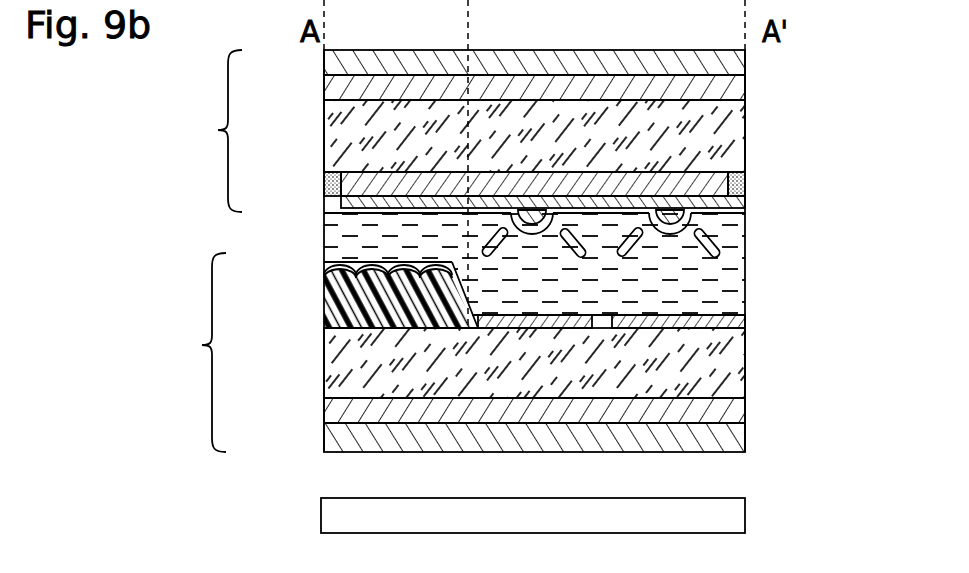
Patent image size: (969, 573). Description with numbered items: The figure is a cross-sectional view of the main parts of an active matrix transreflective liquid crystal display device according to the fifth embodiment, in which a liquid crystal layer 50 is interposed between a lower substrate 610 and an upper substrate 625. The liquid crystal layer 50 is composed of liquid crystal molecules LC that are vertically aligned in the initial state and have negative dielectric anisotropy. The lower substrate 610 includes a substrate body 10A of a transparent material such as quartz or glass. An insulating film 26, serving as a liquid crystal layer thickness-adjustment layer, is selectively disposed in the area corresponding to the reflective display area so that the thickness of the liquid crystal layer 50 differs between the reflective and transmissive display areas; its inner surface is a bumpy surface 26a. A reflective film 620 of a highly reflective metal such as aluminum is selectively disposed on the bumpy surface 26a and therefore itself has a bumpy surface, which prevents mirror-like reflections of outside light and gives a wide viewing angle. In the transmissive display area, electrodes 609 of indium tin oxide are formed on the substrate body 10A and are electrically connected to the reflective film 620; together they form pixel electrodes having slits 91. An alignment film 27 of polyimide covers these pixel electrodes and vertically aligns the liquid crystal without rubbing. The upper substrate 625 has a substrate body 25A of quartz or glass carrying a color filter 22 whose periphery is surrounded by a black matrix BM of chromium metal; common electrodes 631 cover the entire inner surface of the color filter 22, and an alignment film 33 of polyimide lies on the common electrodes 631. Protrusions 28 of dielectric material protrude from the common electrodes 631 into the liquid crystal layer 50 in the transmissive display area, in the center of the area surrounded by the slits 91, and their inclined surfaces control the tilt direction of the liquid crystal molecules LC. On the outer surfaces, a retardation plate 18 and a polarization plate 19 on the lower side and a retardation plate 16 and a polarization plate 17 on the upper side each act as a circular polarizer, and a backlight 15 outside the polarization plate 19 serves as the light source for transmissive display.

The polarization plate 17 is at (747, 55).
The retardation plate 16 is at (747, 90).
The substrate body 25A is at (747, 120).
The black matrix BM is at (332, 183).
The color filter 22 is at (732, 168).
The common electrodes 631 is at (747, 205).
The protrusions 28 is at (533, 207).
The liquid crystal molecules LC is at (747, 258).
The liquid crystal layer 50 is at (747, 288).
The alignment film 33 is at (747, 230).
The electrodes 609 is at (747, 322).
The reflective film 620 is at (322, 302).
The alignment film 27 is at (322, 273).
The bumpy surface 26a is at (322, 263).
The insulating film 26 is at (322, 323).
The substrate body 10A is at (747, 360).
The retardation plate 18 is at (747, 405).
The polarization plate 19 is at (747, 440).
The slits 91 is at (448, 330).
The backlight 15 is at (736, 522).
The upper substrate 625 is at (204, 131).
The lower substrate 610 is at (189, 352).